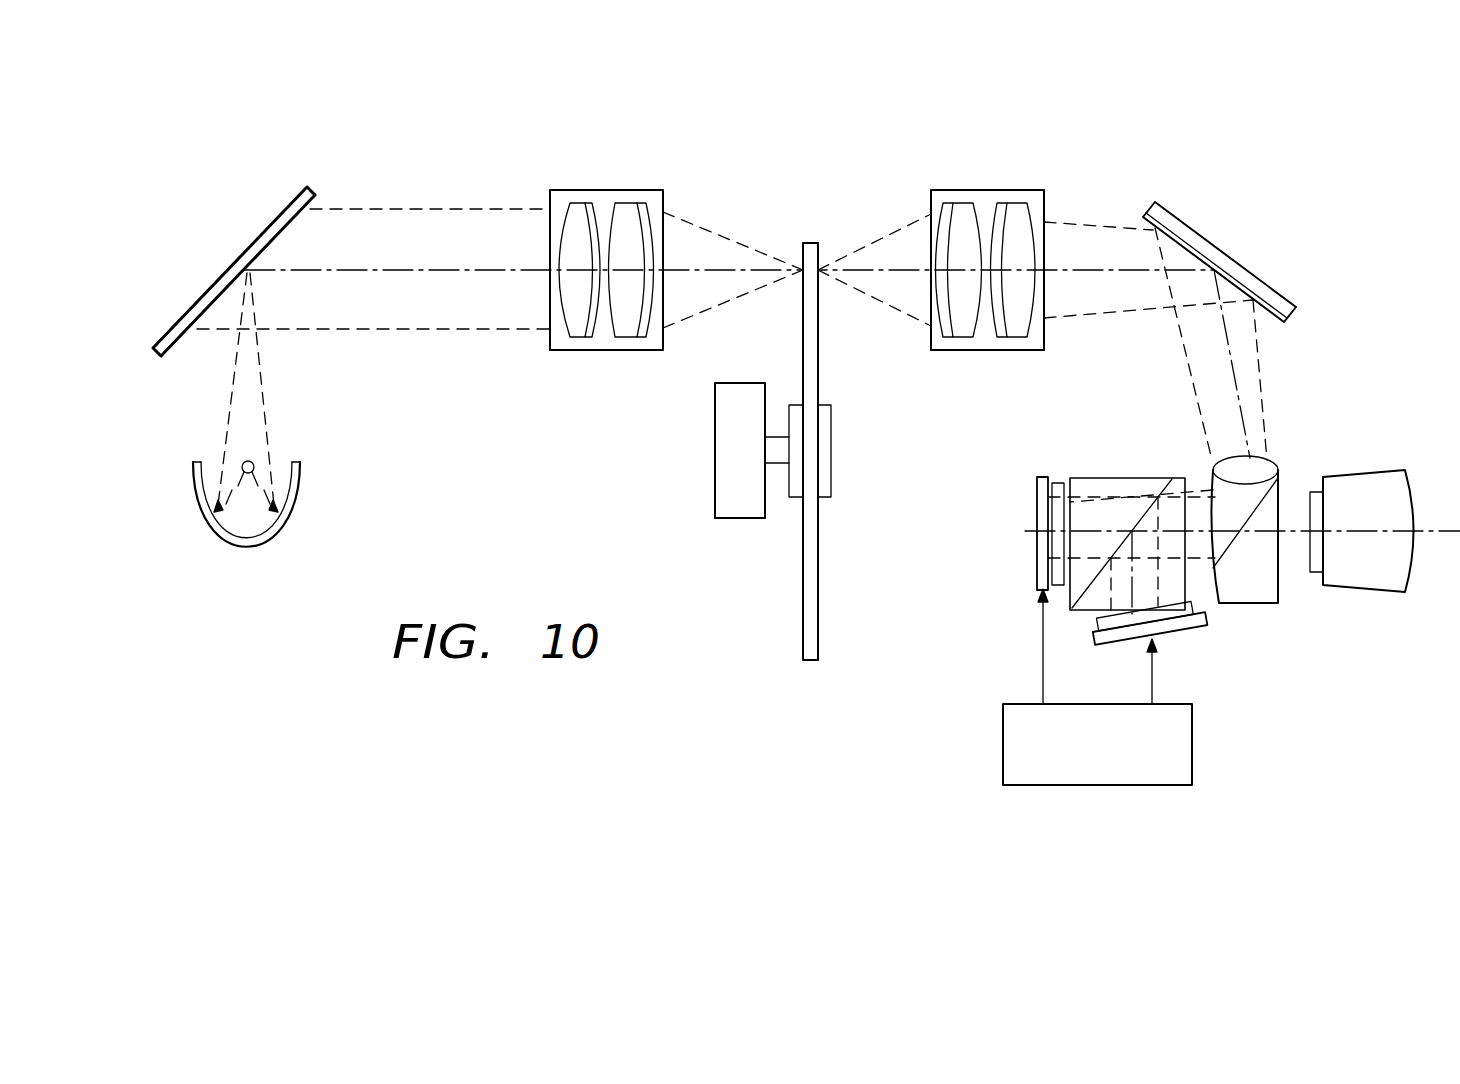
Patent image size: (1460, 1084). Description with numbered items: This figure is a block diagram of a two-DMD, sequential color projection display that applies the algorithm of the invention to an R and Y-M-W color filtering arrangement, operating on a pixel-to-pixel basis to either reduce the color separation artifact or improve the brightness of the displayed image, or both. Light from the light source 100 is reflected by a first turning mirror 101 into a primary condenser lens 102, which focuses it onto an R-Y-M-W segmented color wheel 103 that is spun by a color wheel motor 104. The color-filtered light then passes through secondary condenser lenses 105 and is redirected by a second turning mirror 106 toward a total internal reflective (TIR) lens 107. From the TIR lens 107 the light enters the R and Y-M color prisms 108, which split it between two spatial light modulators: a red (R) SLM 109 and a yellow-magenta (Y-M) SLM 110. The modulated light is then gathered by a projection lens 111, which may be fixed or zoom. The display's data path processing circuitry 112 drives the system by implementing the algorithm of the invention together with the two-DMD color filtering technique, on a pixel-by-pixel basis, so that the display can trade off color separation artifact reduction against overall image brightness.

The light source 100 is at (230, 540).
The first turning mirror 101 is at (238, 255).
The primary condenser lens 102 is at (603, 188).
The R-Y-M-W segmented color wheel 103 is at (800, 598).
The color wheel motor 104 is at (713, 442).
The secondary condenser lenses 105 is at (996, 188).
The second turning mirror 106 is at (1220, 246).
The total internal reflective (TIR) lens 107 is at (1250, 605).
The R and Y-M color prisms 108 is at (1128, 477).
The red (R) SLM 109 is at (1180, 631).
The yellow-magenta (Y-M) SLM 110 is at (1035, 548).
The projection lens 111 is at (1370, 590).
The data path processing circuitry 112 is at (1192, 750).